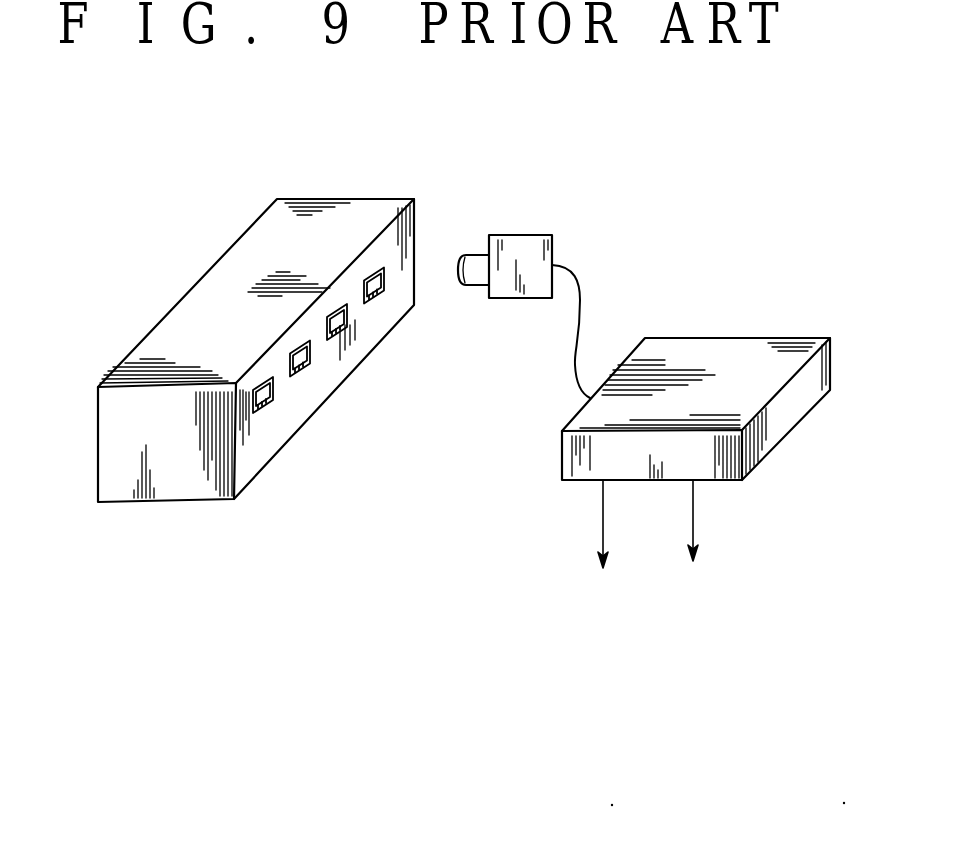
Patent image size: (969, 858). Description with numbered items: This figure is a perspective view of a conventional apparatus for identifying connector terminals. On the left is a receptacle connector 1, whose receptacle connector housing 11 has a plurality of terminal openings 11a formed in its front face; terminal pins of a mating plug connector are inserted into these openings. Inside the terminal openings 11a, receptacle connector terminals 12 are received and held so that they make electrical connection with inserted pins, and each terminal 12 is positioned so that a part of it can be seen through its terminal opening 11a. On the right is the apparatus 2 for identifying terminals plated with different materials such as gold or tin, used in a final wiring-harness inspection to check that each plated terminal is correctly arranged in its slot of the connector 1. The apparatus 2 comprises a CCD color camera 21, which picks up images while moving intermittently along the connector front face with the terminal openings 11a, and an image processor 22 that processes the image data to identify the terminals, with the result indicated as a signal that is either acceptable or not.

The receptacle connector 1 is at (355, 183).
The receptacle connector housing 11 is at (221, 258).
The terminal openings 11a is at (258, 395).
The receptacle connector terminals 12 is at (268, 409).
The apparatus for identifying terminals 2 is at (668, 285).
The CCD color camera 21 is at (513, 292).
The image processor 22 is at (575, 450).